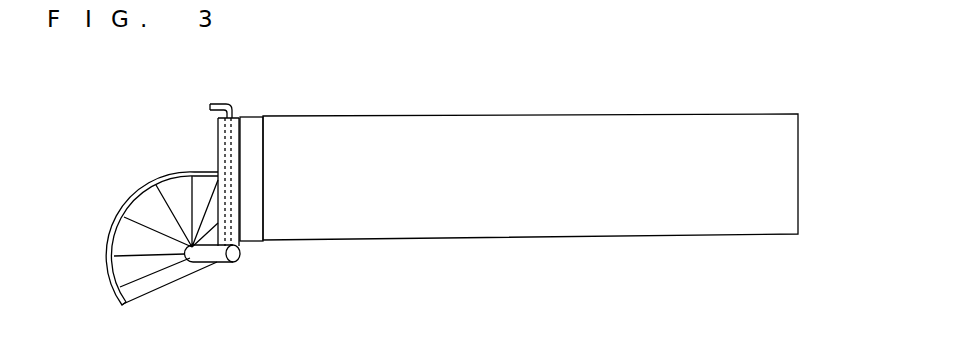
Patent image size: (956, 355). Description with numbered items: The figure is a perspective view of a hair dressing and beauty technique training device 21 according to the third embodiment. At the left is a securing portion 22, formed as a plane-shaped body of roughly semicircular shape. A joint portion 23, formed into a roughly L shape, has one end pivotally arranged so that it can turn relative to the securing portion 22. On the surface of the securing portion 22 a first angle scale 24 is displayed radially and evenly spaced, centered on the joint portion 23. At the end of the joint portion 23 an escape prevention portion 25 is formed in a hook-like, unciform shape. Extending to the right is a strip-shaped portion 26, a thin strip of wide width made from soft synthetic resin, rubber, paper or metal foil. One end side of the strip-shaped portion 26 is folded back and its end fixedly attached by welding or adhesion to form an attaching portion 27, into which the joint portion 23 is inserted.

The hair dressing and beauty technique training device 21 is at (439, 187).
The securing portion 22 is at (146, 217).
The joint portion 23 is at (215, 260).
The first angle scale 24 is at (128, 247).
The escape prevention portion 25 is at (209, 106).
The strip-shaped portion 26 is at (495, 117).
The attaching portion 27 is at (240, 233).